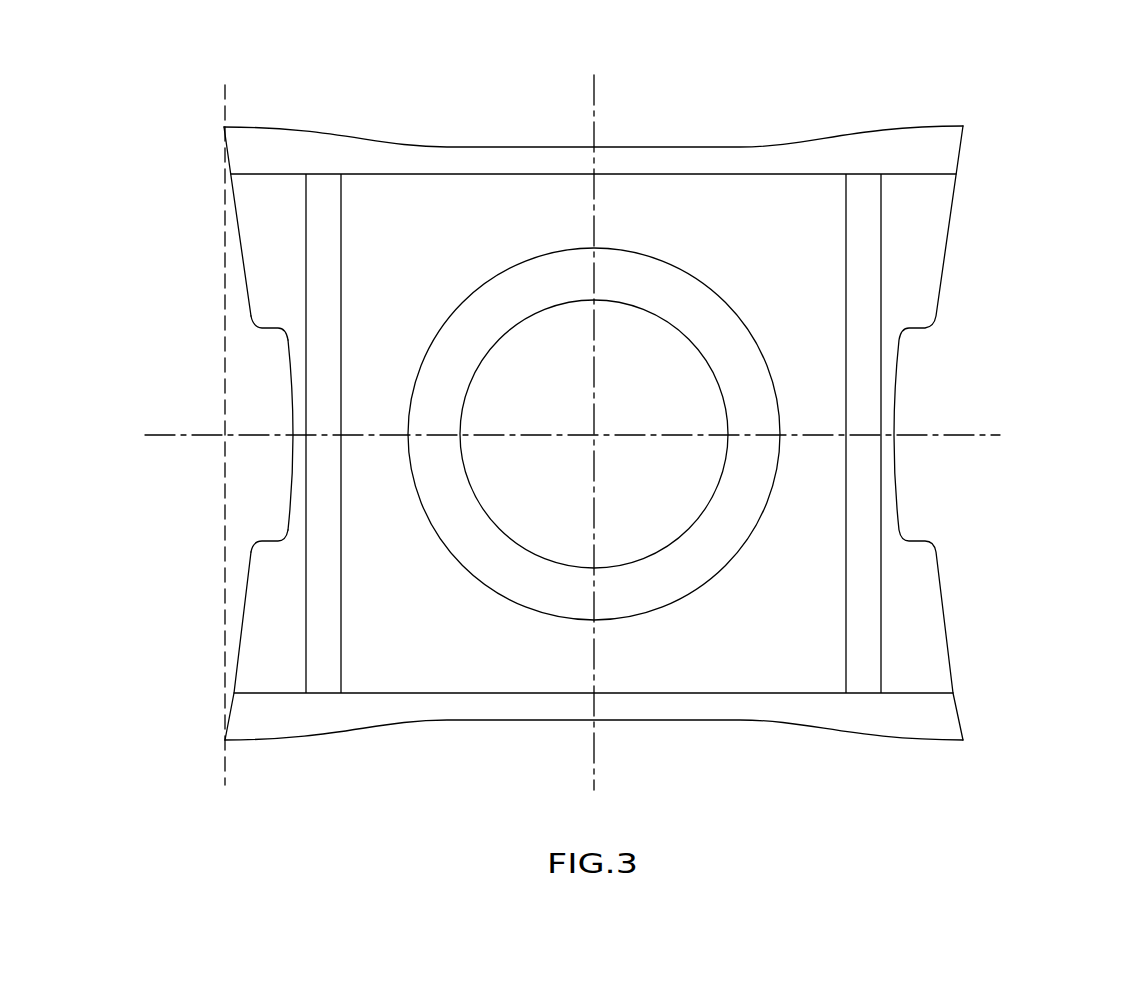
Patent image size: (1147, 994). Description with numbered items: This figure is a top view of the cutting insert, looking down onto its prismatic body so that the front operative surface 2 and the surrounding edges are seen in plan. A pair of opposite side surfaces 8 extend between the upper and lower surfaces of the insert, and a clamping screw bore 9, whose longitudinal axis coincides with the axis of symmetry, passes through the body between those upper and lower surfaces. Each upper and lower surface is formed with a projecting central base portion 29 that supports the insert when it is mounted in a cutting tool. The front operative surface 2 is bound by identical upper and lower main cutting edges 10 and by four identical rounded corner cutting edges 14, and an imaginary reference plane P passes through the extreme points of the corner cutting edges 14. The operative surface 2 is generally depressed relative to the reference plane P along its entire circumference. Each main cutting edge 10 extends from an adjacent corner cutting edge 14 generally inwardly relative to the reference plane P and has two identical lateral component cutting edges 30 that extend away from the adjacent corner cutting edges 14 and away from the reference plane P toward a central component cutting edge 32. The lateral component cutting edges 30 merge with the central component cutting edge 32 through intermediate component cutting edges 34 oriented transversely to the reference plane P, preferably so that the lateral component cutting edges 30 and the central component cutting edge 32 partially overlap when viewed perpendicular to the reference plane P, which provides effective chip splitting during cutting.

The front operative surface 2 is at (248, 492).
The side surface 8 is at (480, 115).
The clamping screw bore 9 is at (594, 434).
The main cutting edge 10 is at (950, 243).
The corner cutting edge 14 is at (224, 127).
The projecting central base portion 29 is at (588, 423).
The lateral component cutting edge 30 is at (243, 257).
The central component cutting edge 32 is at (292, 400).
The intermediate component cutting edge 34 is at (270, 330).
The reference plane P is at (225, 105).